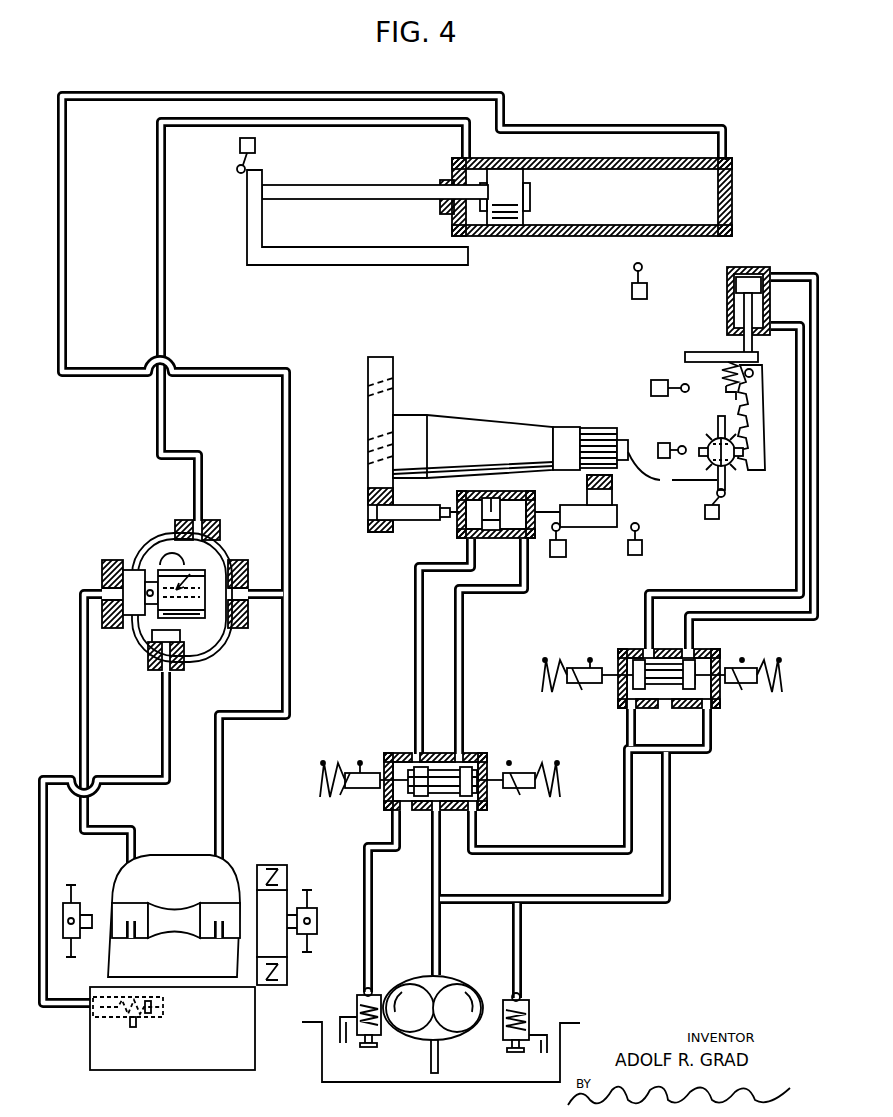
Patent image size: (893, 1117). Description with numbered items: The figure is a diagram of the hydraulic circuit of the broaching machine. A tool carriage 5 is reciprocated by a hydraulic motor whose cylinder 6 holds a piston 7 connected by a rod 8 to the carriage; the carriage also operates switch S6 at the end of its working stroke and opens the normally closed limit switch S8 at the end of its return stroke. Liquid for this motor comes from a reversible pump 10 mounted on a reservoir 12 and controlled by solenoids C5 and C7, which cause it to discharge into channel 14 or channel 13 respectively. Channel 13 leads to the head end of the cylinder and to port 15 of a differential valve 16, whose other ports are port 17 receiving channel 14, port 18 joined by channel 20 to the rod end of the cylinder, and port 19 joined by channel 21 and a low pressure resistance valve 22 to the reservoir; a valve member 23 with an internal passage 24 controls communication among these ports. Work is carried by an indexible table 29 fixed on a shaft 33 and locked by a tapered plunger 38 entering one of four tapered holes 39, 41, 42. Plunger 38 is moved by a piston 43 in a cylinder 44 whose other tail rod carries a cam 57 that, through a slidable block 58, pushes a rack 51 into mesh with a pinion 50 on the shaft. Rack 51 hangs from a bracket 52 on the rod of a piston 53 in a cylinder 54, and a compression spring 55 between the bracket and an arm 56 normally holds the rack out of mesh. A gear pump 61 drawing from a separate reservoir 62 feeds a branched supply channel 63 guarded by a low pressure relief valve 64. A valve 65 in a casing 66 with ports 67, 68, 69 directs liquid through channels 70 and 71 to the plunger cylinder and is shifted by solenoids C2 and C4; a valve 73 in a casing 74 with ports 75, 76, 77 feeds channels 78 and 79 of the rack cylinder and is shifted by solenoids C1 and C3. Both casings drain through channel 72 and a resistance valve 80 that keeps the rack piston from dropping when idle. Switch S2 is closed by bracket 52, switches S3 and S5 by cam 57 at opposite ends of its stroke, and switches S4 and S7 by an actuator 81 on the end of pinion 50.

The tool carriage 5 is at (330, 263).
The cylinder 6 is at (734, 192).
The piston 7 is at (505, 197).
The rod 8 is at (350, 186).
The reversible pump 10 is at (190, 920).
The reservoir 12 is at (172, 1028).
The channel 13 is at (727, 141).
The channel 14 is at (79, 727).
The port 15 is at (248, 588).
The differential valve 16 is at (164, 592).
The port 17 is at (102, 580).
The port 18 is at (190, 522).
The port 19 is at (158, 670).
The channel 20 is at (437, 125).
The channel 21 is at (148, 776).
The low pressure resistance valve 22 is at (95, 1012).
The valve member 23 is at (130, 620).
The internal passage 24 is at (232, 552).
The indexible table 29 is at (381, 360).
The shaft 33 is at (486, 446).
The plunger 38 is at (440, 506).
The tapered hole 39 is at (368, 513).
The tapered hole 41 is at (366, 382).
The tapered hole 42 is at (366, 443).
The piston 43 is at (496, 538).
The cylinder 44 is at (458, 530).
The pinion 50 is at (598, 428).
The rack 51 is at (588, 485).
The bracket 52 is at (722, 352).
The piston 53 is at (746, 287).
The cylinder 54 is at (728, 314).
The compression spring 55 is at (720, 372).
The arm 56 is at (734, 394).
The cam 57 is at (588, 516).
The slidable block 58 is at (612, 500).
The gear pump 61 is at (452, 998).
The reservoir 62 is at (338, 1068).
The branched supply channel 63 is at (441, 872).
The low pressure relief valve 64 is at (520, 994).
The valve 65 is at (472, 760).
The casing 66 is at (402, 752).
The port 67 is at (434, 752).
The port 68 is at (408, 810).
The port 69 is at (452, 810).
The channel 70 is at (414, 623).
The channel 71 is at (465, 623).
The drain channel 72 is at (373, 912).
The valve 73 is at (628, 650).
The casing 74 is at (706, 656).
The port 75 is at (666, 650).
The port 76 is at (646, 707).
The port 77 is at (698, 707).
The channel 78 is at (762, 590).
The channel 79 is at (770, 621).
The resistance valve 80 is at (372, 988).
The actuator 81 is at (672, 470).
The solenoid C1 is at (762, 696).
The solenoid C2 is at (332, 758).
The solenoid C3 is at (562, 656).
The solenoid C4 is at (538, 760).
The solenoid C5 is at (287, 975).
The solenoid C7 is at (265, 868).
The switch S2 is at (655, 387).
The switch S3 is at (646, 539).
The switch S4 is at (664, 443).
The switch S5 is at (558, 557).
The switch S6 is at (623, 282).
The switch S7 is at (724, 504).
The limit switch S8 is at (238, 148).